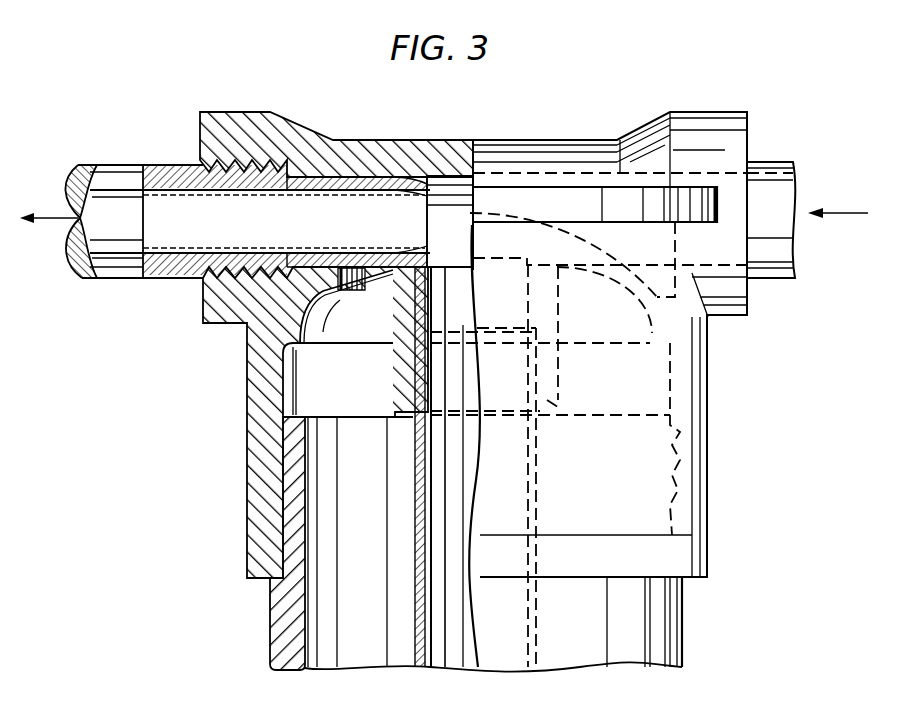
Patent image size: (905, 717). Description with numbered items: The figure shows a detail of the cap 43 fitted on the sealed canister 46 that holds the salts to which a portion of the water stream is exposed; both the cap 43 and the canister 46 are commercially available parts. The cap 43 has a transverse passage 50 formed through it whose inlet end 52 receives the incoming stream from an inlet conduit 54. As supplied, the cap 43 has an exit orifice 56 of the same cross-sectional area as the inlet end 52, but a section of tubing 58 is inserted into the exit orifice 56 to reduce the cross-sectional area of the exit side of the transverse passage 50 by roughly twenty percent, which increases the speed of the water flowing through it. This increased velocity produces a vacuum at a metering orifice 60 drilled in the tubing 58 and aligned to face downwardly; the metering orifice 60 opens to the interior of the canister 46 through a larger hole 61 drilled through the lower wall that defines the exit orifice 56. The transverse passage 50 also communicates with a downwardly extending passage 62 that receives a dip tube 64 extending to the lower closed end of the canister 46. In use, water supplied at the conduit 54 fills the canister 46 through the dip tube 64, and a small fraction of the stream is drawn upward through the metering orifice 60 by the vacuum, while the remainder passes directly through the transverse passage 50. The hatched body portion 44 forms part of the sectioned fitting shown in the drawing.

The cap 43 is at (725, 112).
The body 44 is at (250, 636).
The canister 46 is at (684, 636).
The transverse passage 50 is at (468, 240).
The inlet end 52 is at (732, 260).
The inlet conduit 54 is at (795, 183).
The exit orifice 56 is at (319, 268).
The section of tubing 58 is at (337, 190).
The metering orifice 60 is at (360, 254).
The larger hole 61 is at (360, 290).
The downwardly extending passage 62 is at (468, 314).
The dip tube 64 is at (427, 553).